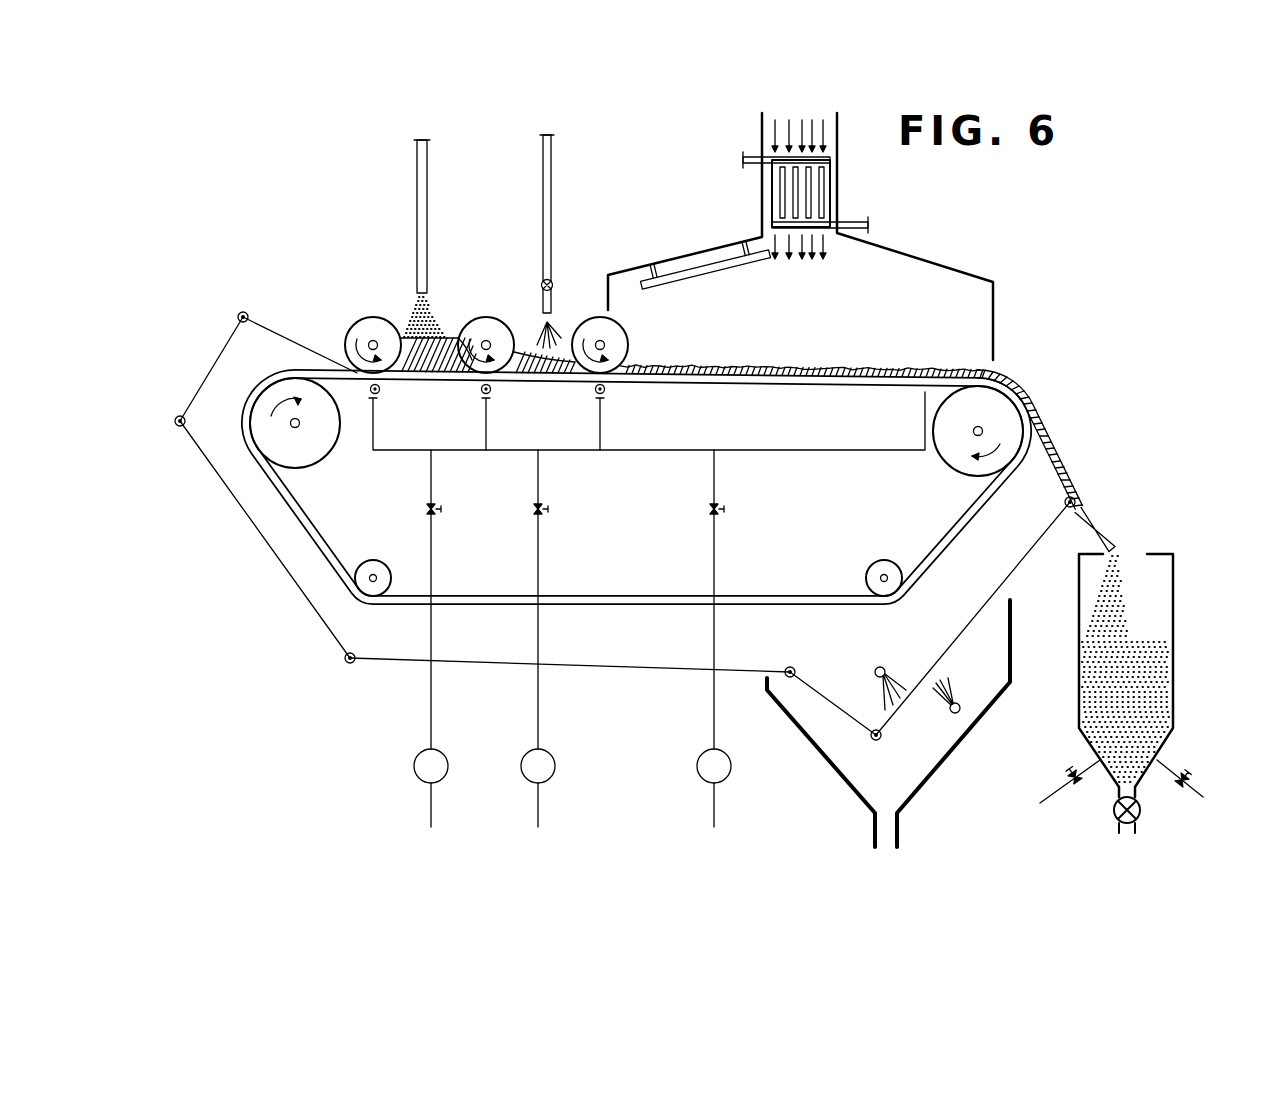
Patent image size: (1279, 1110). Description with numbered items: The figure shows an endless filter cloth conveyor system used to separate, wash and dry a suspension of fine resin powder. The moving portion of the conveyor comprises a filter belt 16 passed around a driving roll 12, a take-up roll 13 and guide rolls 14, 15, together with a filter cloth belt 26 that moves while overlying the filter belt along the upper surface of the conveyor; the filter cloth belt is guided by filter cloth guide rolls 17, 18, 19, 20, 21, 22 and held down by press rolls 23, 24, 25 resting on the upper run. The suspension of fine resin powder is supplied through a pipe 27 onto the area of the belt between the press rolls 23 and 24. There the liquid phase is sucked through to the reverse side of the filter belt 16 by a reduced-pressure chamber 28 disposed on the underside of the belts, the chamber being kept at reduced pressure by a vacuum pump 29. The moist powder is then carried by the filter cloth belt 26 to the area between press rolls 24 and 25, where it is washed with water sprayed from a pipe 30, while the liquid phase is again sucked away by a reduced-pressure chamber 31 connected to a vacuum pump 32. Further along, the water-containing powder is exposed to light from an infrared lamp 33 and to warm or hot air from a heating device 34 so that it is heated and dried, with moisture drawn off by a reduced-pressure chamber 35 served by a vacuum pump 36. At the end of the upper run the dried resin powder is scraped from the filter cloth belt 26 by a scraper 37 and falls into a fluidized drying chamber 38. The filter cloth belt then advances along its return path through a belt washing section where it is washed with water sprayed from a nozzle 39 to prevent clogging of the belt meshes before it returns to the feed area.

The driving roll 12 is at (1000, 408).
The take-up roll 13 is at (283, 390).
The guide roll 14 is at (870, 570).
The guide roll 15 is at (375, 560).
The filter belt 16 is at (361, 383).
The filter cloth guide roll 17 is at (1064, 503).
The filter cloth guide roll 18 is at (874, 730).
The filter cloth guide roll 19 is at (793, 678).
The filter cloth guide roll 20 is at (355, 655).
The filter cloth guide roll 21 is at (186, 421).
The filter cloth guide roll 22 is at (244, 312).
The press roll 23 is at (378, 320).
The press roll 24 is at (492, 320).
The press roll 25 is at (597, 320).
The filter cloth belt 26 is at (290, 338).
The pipe 27 is at (428, 213).
The reduced-pressure chamber 28 is at (458, 449).
The vacuum pump 29 is at (442, 754).
The pipe 30 is at (552, 197).
The reduced-pressure chamber 31 is at (566, 449).
The vacuum pump 32 is at (550, 754).
The infrared lamp 33 is at (658, 268).
The heating device 34 is at (818, 265).
The reduced-pressure chamber 35 is at (762, 443).
The vacuum pump 36 is at (703, 756).
The scraper 37 is at (1092, 530).
The fluidized drying chamber 38 is at (1079, 721).
The nozzle 39 is at (880, 667).